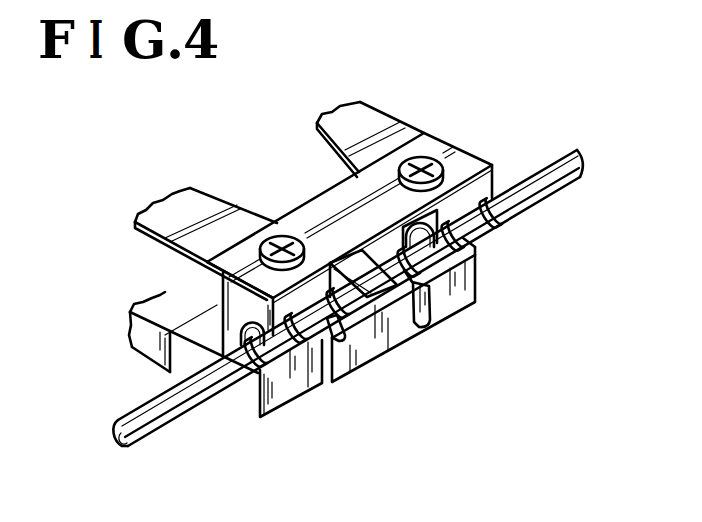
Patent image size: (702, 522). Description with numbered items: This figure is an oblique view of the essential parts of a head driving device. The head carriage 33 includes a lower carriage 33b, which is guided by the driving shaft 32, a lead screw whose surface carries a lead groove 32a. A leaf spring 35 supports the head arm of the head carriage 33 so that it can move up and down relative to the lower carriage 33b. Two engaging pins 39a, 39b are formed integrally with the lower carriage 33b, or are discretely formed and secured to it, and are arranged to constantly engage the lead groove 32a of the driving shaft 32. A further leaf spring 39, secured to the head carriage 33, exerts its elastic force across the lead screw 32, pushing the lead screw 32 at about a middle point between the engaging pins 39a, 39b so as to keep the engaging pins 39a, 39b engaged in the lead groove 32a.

The driving shaft 32 is at (524, 175).
The lead groove 32a is at (479, 237).
The head carriage 33 is at (220, 403).
The lower carriage 33b is at (302, 381).
The leaf spring 35 is at (376, 120).
The leaf spring 39 is at (353, 257).
The engaging pin 39a is at (342, 338).
The engaging pin 39b is at (413, 292).